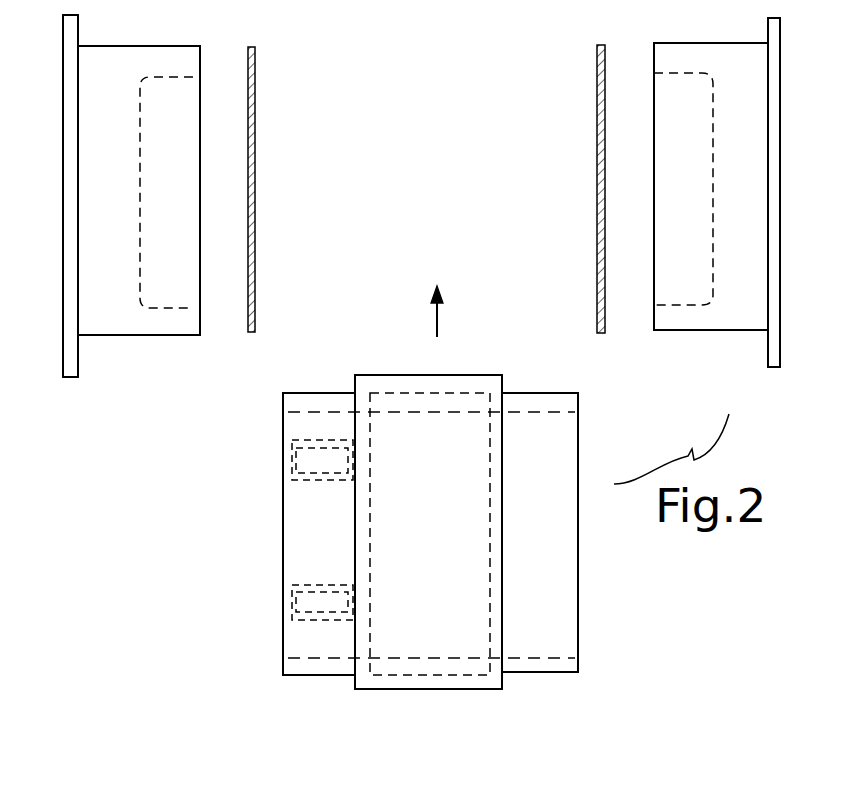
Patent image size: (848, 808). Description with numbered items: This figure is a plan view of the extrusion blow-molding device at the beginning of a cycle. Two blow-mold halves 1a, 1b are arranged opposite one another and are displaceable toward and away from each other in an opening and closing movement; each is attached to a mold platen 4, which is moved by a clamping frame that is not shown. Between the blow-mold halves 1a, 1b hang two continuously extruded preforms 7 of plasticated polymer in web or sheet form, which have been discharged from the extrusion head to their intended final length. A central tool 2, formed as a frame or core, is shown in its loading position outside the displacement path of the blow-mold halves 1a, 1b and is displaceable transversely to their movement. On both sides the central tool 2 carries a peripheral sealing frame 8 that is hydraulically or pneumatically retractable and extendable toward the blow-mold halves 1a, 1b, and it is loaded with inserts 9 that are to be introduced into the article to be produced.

The blow-mold half 1a is at (113, 315).
The blow-mold half 1b is at (727, 305).
The central tool 2 is at (440, 423).
The mold platen 4 is at (73, 313).
The preform 7 is at (256, 128).
The sealing frame 8 is at (300, 505).
The insert 9 is at (302, 466).